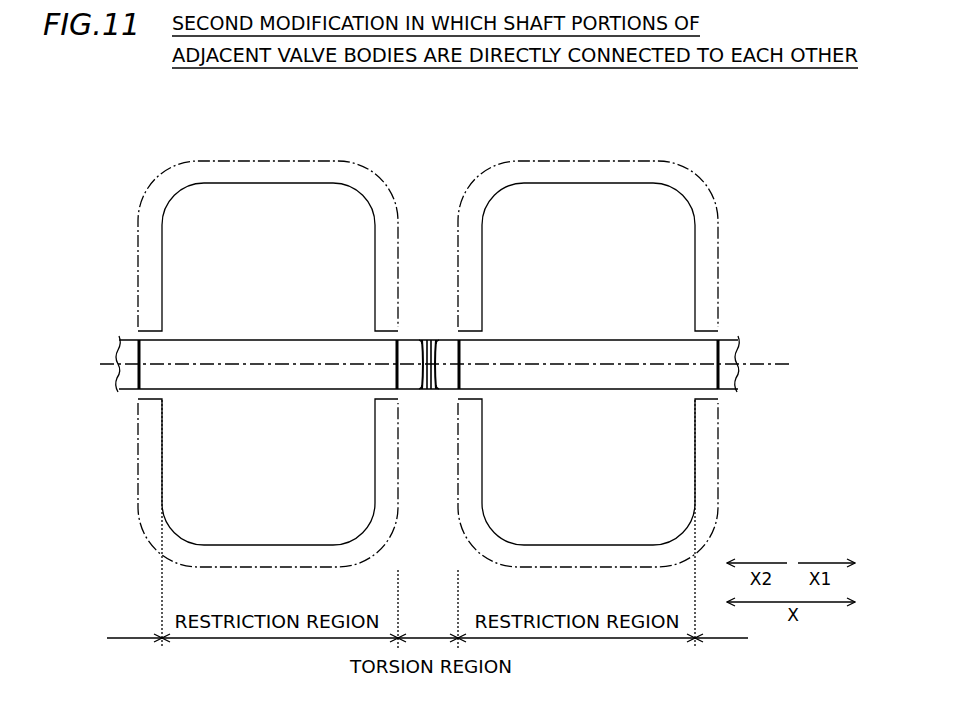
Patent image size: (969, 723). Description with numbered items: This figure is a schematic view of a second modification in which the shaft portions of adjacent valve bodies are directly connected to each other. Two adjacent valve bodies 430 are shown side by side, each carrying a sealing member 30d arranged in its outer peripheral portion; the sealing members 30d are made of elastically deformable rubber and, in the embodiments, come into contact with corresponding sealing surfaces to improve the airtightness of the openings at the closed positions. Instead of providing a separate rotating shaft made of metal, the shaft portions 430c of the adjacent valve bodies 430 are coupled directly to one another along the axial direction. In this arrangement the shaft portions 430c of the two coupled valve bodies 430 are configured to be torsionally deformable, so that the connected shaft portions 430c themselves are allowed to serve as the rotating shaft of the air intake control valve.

The valve body 430 is at (235, 196).
The sealing member 30d is at (300, 160).
The shaft portion 430c is at (412, 338).